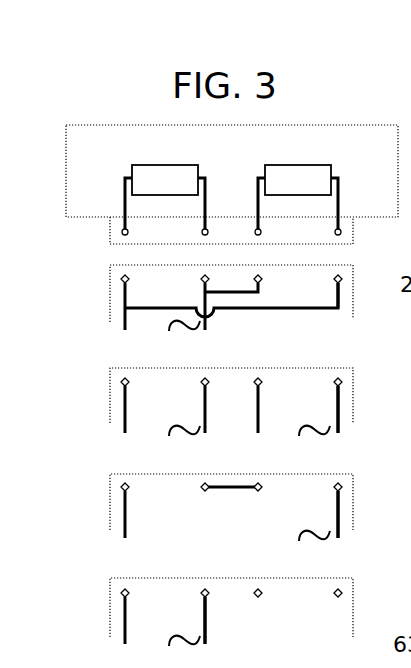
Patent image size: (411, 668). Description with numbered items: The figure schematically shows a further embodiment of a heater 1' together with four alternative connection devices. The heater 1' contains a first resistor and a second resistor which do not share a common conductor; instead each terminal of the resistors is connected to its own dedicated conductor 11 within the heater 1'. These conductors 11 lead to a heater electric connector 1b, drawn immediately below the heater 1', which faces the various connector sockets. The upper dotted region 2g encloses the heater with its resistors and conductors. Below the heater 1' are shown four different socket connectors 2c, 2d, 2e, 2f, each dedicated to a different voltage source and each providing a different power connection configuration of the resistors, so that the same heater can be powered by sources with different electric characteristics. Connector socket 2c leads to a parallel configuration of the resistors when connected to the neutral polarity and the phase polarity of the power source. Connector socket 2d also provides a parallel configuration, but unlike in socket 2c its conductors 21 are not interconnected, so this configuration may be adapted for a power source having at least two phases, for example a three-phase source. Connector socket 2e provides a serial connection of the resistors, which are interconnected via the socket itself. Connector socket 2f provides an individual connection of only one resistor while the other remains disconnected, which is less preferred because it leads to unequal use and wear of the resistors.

The heater 1' is at (228, 124).
The heating element assembly 2g is at (238, 148).
The heater electric connector 1b is at (96, 231).
The conductor 11 is at (123, 196).
The connector socket 2c is at (88, 298).
The connector socket 2d is at (90, 401).
The connector socket 2e is at (90, 508).
The connector socket 2f is at (92, 612).
The conductors 21 is at (343, 292).